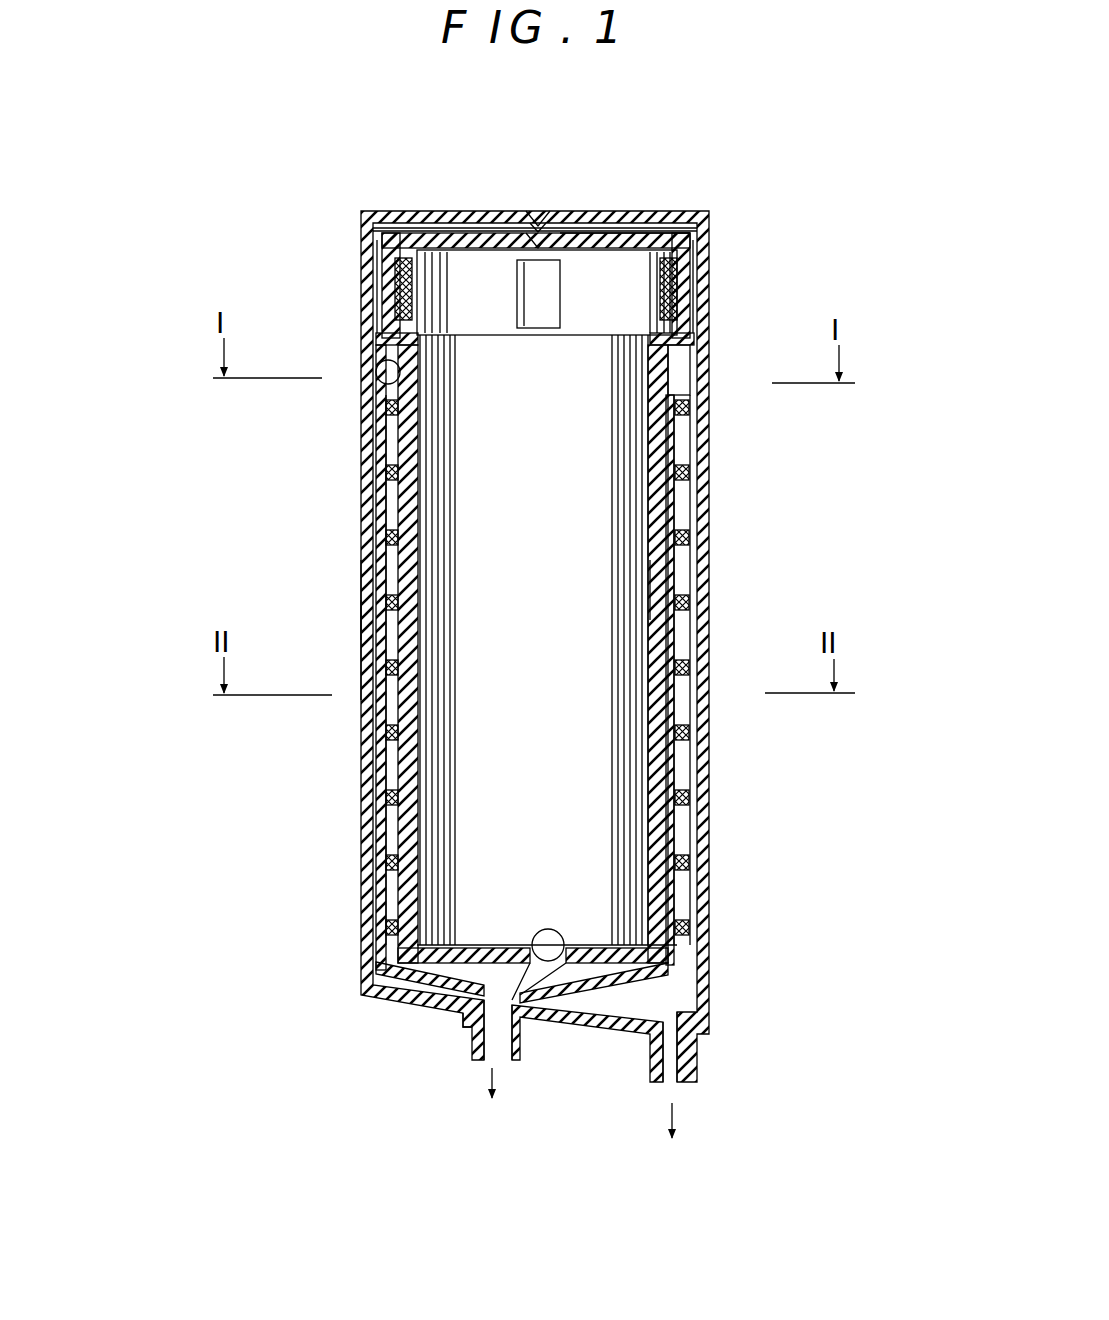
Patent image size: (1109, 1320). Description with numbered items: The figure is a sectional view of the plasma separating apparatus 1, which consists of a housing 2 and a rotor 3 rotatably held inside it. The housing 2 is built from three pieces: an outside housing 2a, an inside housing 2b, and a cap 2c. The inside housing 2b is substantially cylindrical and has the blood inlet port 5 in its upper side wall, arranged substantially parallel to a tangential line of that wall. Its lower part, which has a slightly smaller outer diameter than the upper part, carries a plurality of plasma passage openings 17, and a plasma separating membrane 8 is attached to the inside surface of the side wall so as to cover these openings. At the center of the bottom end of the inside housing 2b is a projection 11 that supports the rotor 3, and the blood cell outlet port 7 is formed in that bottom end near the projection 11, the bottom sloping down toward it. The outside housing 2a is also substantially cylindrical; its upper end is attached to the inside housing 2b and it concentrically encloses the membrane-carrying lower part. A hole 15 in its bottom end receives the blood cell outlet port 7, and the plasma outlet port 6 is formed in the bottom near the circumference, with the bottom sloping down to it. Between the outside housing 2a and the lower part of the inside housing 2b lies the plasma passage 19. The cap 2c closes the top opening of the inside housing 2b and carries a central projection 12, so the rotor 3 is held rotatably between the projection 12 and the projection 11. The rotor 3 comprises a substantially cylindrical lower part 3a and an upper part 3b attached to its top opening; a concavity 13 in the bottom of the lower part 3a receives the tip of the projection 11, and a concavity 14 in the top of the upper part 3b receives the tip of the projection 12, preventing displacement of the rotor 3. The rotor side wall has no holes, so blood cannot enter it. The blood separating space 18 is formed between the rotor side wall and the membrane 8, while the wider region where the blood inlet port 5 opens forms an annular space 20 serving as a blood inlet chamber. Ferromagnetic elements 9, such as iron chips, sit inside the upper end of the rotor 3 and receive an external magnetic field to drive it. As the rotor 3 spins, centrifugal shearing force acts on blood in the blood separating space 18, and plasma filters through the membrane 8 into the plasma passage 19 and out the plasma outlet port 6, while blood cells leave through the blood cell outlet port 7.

The plasma separating apparatus 1 is at (338, 950).
The housing 2 is at (361, 730).
The outside housing 2a is at (368, 595).
The inside housing 2b is at (365, 296).
The cap 2c is at (414, 211).
The rotor 3 is at (400, 443).
The lower part of the rotor 3a is at (656, 590).
The upper part of the rotor 3b is at (670, 243).
The blood inlet port 5 is at (378, 365).
The plasma outlet port 6 is at (672, 1080).
The blood cell outlet port 7 is at (480, 1060).
The plasma separating membrane 8 is at (381, 520).
The ferromagnetic elements 9 is at (395, 290).
The projection 11 is at (512, 985).
The projection 12 is at (537, 243).
The concavity 13 is at (548, 962).
The concavity 14 is at (547, 245).
The hole 15 is at (463, 1020).
The plasma passage openings 17 is at (388, 645).
The blood separating space 18 is at (398, 800).
The plasma passage 19 is at (378, 865).
The annular space 20 is at (680, 365).